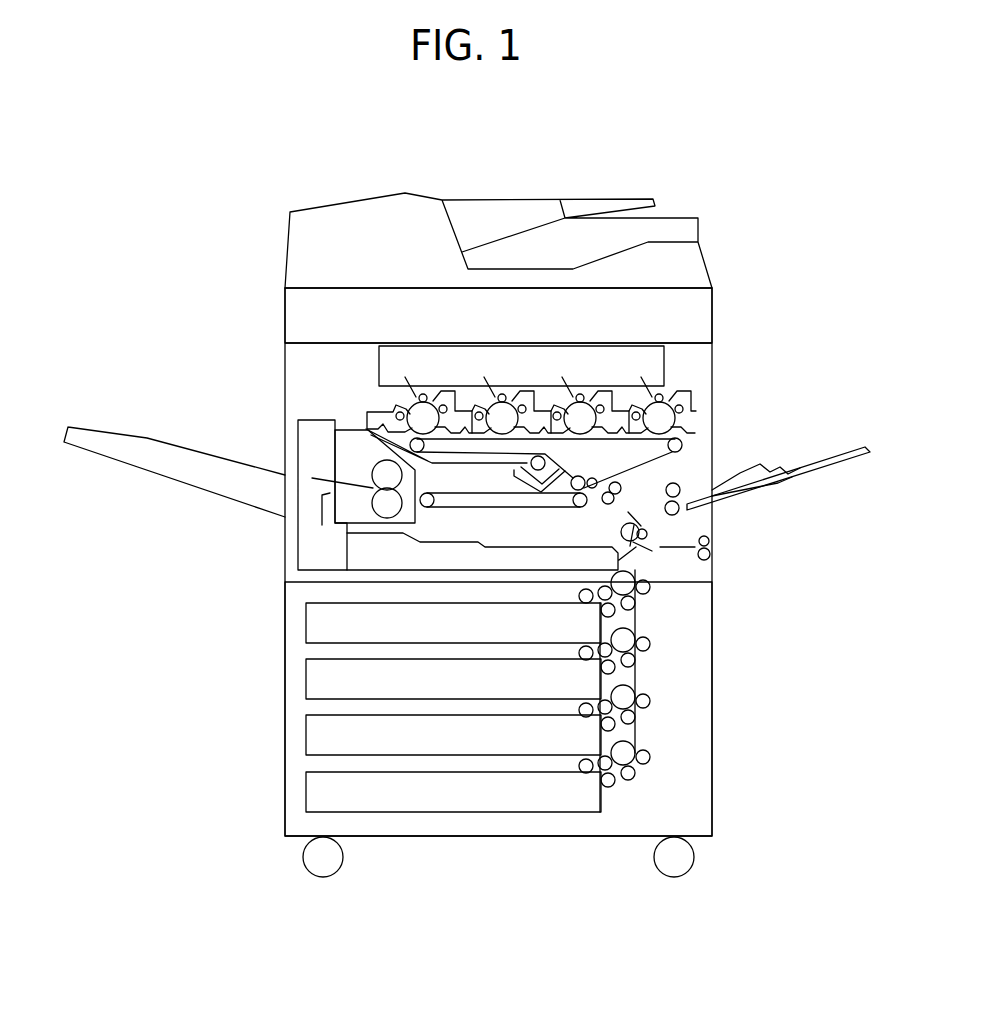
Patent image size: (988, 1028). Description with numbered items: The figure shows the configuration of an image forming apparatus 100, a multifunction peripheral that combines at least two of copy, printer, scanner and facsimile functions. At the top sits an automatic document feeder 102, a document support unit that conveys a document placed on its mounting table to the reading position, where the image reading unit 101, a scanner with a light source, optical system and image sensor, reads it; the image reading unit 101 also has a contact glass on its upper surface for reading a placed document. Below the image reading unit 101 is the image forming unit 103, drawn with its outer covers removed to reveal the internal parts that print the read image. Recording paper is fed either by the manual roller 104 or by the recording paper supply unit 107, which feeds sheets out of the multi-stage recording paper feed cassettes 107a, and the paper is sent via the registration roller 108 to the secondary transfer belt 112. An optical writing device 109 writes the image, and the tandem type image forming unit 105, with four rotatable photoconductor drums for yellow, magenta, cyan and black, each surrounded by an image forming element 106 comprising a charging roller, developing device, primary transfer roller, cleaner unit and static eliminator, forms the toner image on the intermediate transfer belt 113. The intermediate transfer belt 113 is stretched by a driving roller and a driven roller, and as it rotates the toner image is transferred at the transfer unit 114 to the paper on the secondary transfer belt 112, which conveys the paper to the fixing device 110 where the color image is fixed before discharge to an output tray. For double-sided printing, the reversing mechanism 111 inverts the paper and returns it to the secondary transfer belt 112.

The image forming apparatus 100 is at (702, 164).
The image reading unit 101 is at (298, 318).
The automatic document feeder 102 is at (298, 248).
The image forming unit 103 is at (712, 748).
The manual roller 104 is at (713, 553).
The tandem type image forming unit 105 is at (572, 402).
The image forming element 106 is at (578, 476).
The recording paper supply unit 107 is at (635, 675).
The recording paper feed cassettes 107a is at (305, 792).
The registration roller 108 is at (650, 534).
The optical writing device 109 is at (378, 366).
The fixing device 110 is at (372, 475).
The reversing mechanism 111 is at (362, 551).
The secondary transfer belt 112 is at (463, 507).
The intermediate transfer belt 113 is at (683, 445).
The transfer unit 114 is at (677, 419).